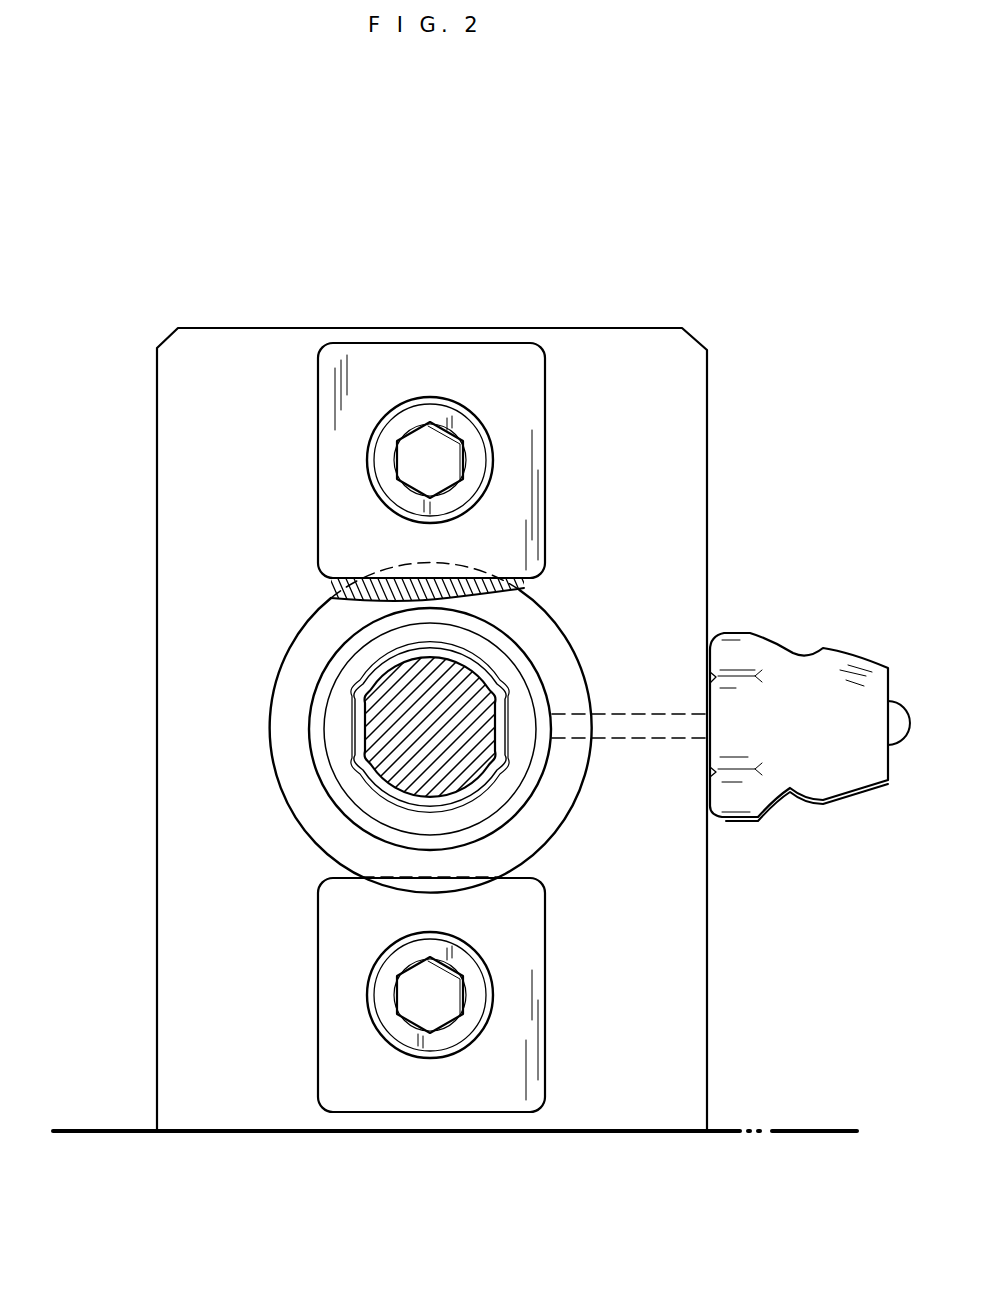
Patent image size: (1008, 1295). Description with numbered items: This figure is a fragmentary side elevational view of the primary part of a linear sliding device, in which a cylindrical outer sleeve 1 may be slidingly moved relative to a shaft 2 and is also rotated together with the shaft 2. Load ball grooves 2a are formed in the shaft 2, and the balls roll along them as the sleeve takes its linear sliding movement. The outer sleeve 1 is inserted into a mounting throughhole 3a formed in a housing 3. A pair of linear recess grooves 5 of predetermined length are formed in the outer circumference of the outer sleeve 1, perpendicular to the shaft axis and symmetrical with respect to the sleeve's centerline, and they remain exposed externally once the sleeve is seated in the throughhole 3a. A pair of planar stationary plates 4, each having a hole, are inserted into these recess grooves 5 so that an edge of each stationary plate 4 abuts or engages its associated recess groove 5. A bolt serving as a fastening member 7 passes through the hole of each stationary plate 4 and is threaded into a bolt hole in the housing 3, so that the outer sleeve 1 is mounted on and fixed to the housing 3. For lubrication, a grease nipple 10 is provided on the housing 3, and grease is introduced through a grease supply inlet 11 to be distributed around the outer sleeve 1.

The outer sleeve 1 is at (527, 848).
The shaft 2 is at (483, 763).
The load ball grooves 2a is at (370, 763).
The housing 3 is at (298, 337).
The mounting throughhole 3a is at (297, 813).
The stationary plates 4 is at (505, 353).
The recess grooves 5 is at (548, 565).
The fastening member 7 is at (438, 405).
The grease nipple 10 is at (832, 650).
The grease supply inlet 11 is at (620, 716).